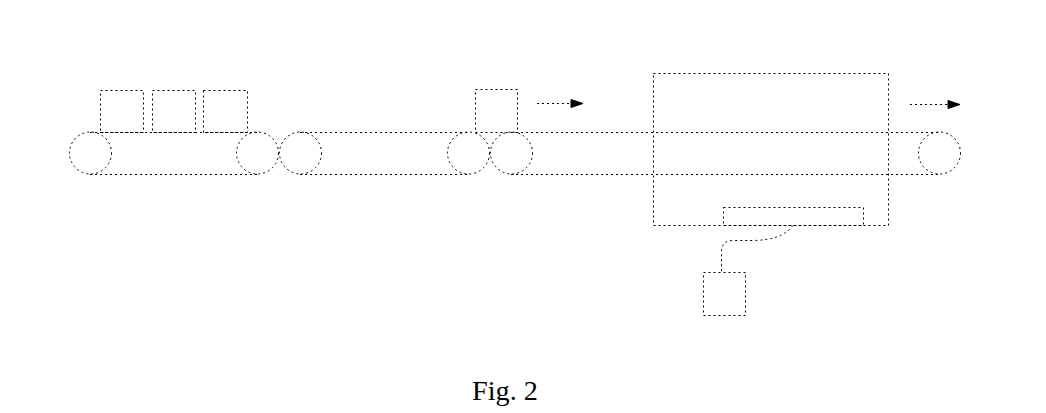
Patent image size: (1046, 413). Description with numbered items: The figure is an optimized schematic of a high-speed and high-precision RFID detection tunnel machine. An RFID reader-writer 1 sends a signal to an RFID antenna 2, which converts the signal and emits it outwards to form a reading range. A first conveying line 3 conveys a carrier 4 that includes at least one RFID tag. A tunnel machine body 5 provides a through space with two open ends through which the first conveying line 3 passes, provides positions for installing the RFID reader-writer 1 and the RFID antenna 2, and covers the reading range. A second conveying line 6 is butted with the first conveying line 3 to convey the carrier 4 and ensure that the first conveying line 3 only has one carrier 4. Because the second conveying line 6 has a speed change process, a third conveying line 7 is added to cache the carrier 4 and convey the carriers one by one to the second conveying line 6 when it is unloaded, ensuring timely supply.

The RFID reader-writer 1 is at (723, 298).
The RFID antenna 2 is at (827, 217).
The first conveying line 3 is at (607, 155).
The carrier 4 is at (228, 90).
The tunnel machine body 5 is at (678, 73).
The second conveying line 6 is at (365, 156).
The third conveying line 7 is at (177, 155).